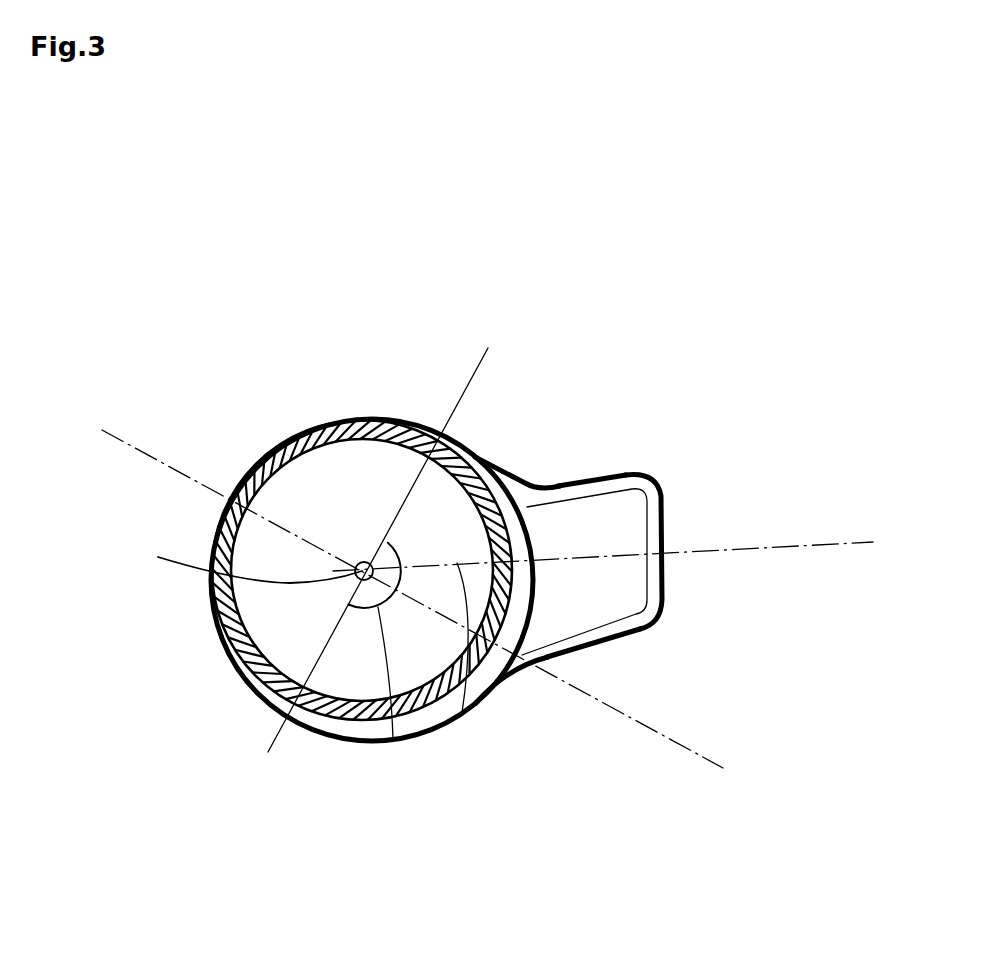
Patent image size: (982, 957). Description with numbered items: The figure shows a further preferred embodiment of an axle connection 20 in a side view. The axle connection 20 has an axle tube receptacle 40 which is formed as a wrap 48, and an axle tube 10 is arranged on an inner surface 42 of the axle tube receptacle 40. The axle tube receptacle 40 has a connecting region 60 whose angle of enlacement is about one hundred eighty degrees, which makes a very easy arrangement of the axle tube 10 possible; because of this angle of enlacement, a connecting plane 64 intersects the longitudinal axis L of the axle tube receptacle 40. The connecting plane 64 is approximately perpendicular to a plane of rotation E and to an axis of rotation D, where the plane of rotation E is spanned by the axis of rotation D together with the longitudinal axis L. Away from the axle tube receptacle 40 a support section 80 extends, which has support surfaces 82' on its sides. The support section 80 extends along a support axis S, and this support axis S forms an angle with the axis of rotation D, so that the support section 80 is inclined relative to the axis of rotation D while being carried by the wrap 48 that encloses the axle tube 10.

The axle tube 10 is at (301, 507).
The axle connection 20 is at (488, 481).
The axle tube receptacle 40 is at (401, 726).
The wrap 48 is at (370, 727).
The inner surface 42 is at (349, 713).
The connecting region 60 is at (437, 425).
The connecting plane 64 is at (477, 367).
The support section 80 is at (689, 541).
The support surface 82' is at (609, 563).
The longitudinal axis L is at (240, 556).
The support axis S is at (808, 545).
The axis of rotation D is at (405, 537).
The plane of rotation E is at (120, 435).